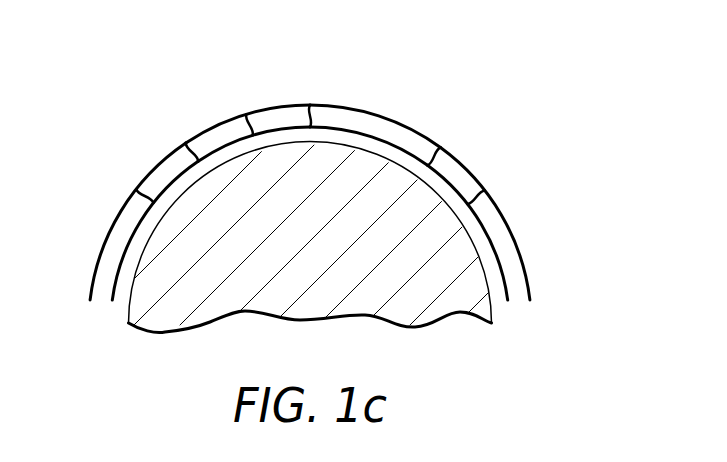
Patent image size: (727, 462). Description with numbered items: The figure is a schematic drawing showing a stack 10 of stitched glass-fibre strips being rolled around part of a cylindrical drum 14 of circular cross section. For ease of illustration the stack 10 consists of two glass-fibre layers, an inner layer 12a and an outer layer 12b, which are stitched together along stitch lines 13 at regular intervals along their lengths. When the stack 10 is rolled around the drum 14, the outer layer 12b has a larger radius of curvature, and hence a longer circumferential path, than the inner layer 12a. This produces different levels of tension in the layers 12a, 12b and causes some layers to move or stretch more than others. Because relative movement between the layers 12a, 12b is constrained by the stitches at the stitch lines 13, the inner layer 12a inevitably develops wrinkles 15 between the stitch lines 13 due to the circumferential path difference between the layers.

The stack 10 is at (148, 154).
The inner glass-fibre layer 12a is at (246, 117).
The outer glass-fibre layer 12b is at (366, 108).
The stitch lines 13 is at (137, 188).
The cylindrical drum 14 is at (312, 308).
The wrinkles 15 is at (187, 142).